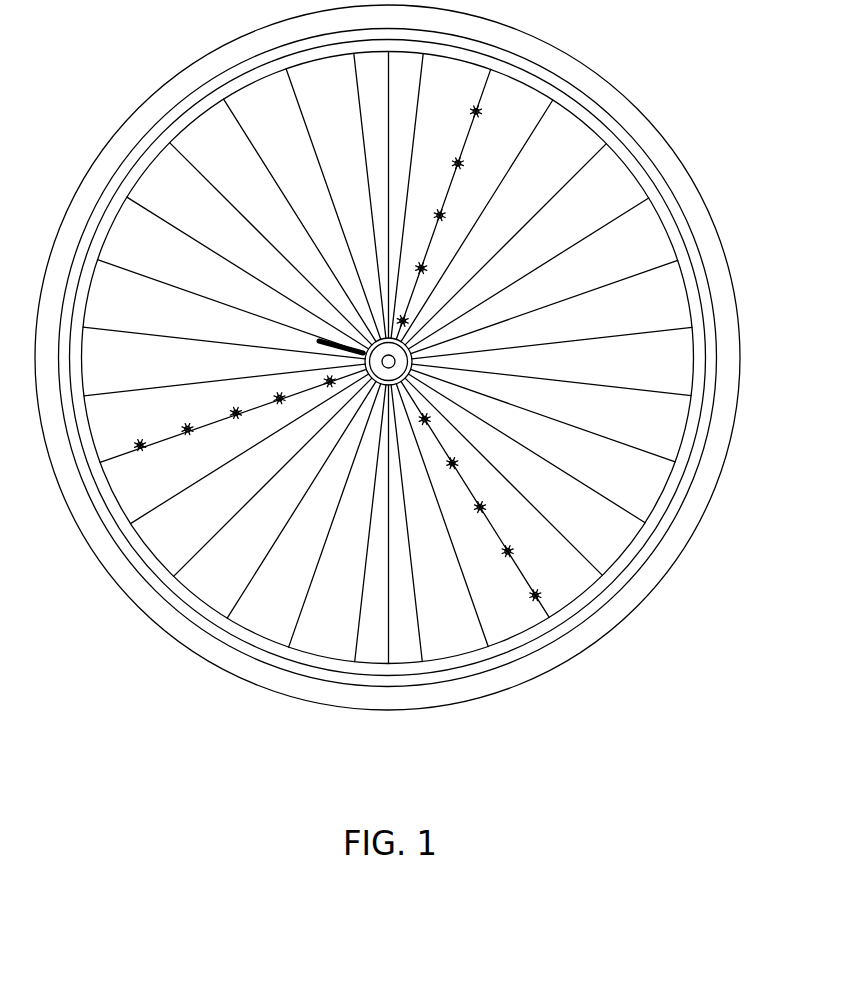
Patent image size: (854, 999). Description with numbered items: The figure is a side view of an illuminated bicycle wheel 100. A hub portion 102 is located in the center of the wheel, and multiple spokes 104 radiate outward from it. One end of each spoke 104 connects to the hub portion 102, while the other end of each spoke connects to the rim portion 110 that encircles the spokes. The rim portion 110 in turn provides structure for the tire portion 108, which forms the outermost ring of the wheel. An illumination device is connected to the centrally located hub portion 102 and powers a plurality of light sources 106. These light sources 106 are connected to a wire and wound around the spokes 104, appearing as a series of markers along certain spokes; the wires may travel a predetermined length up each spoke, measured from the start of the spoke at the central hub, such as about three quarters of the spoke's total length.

The illuminated bicycle wheel 100 is at (695, 92).
The hub portion 102 is at (372, 387).
The spokes 104 is at (573, 290).
The light sources 106 is at (453, 158).
The tire portion 108 is at (92, 158).
The rim portion 110 is at (630, 170).